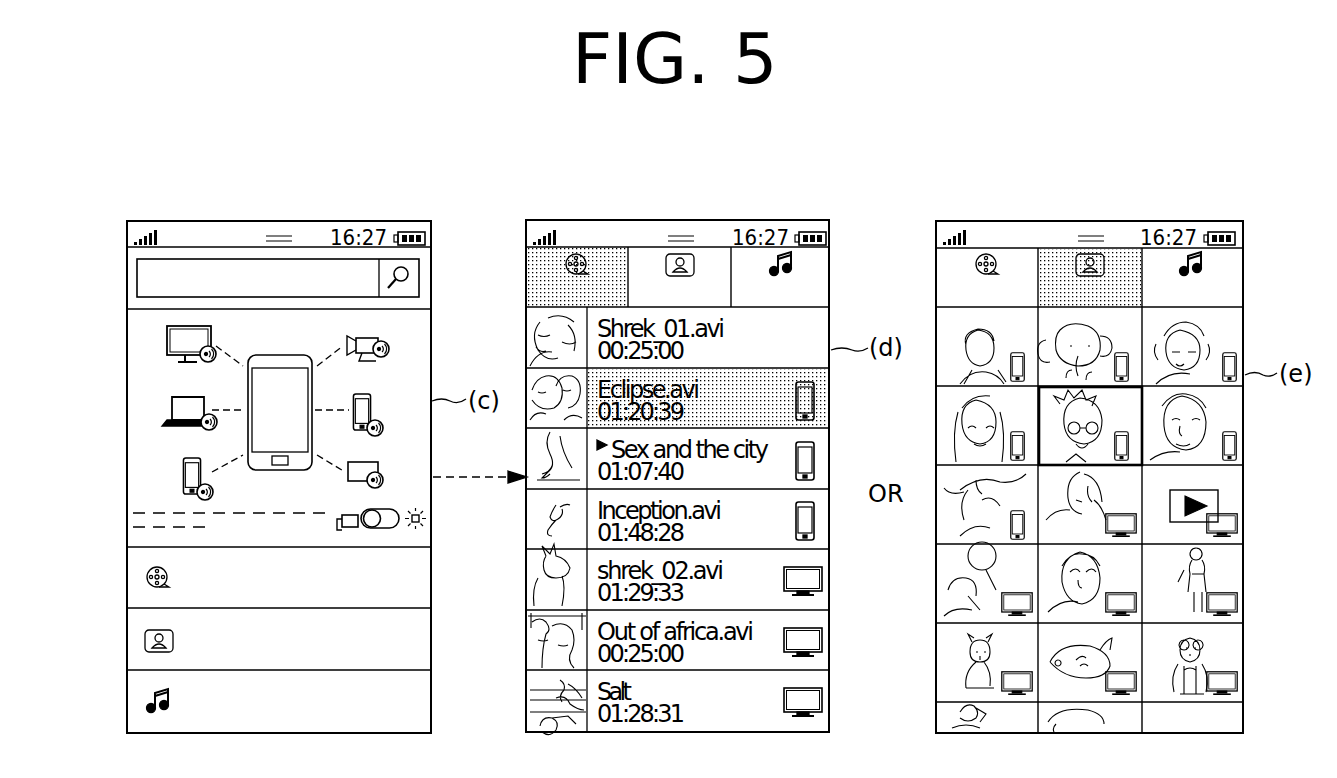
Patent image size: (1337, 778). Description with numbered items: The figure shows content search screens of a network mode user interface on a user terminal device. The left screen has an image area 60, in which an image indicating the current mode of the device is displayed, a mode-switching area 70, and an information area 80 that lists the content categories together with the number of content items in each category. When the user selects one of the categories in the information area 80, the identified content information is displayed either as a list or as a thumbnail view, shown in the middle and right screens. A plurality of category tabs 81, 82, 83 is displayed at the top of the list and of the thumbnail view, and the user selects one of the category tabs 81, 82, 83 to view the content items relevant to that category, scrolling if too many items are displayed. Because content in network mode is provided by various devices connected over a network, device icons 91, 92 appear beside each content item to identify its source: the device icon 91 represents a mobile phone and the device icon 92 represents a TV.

The image area 60 is at (150, 359).
The mode-switching area 70 is at (418, 505).
The information area 80 is at (120, 551).
The category tab 81 is at (602, 252).
The category tab 82 is at (712, 252).
The category tab 83 is at (817, 255).
The device icon 91 is at (813, 462).
The device icon 92 is at (823, 578).